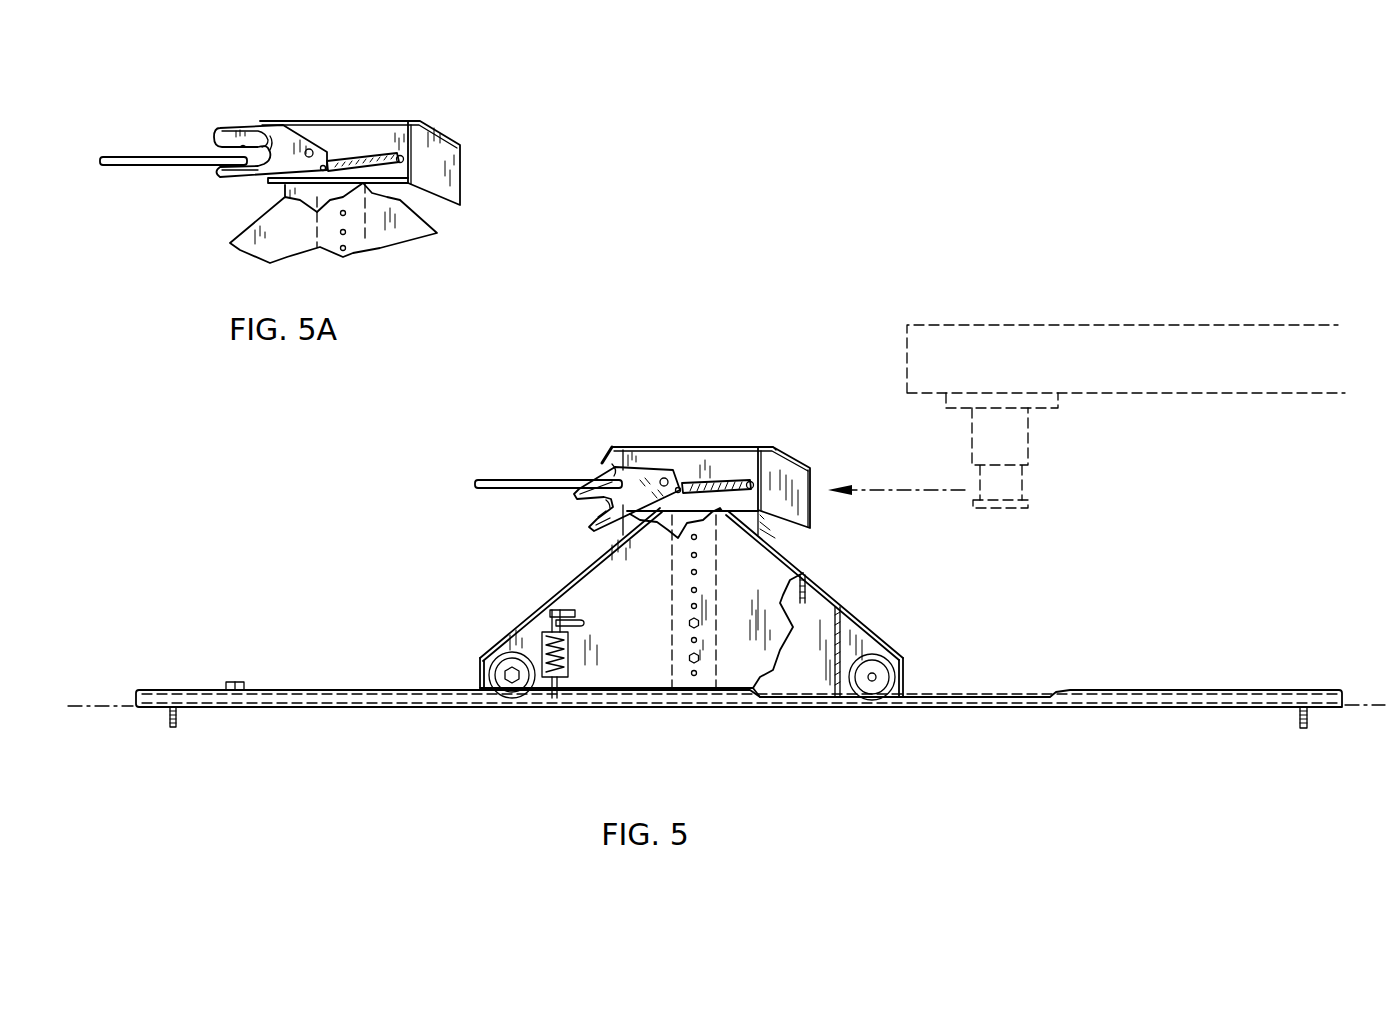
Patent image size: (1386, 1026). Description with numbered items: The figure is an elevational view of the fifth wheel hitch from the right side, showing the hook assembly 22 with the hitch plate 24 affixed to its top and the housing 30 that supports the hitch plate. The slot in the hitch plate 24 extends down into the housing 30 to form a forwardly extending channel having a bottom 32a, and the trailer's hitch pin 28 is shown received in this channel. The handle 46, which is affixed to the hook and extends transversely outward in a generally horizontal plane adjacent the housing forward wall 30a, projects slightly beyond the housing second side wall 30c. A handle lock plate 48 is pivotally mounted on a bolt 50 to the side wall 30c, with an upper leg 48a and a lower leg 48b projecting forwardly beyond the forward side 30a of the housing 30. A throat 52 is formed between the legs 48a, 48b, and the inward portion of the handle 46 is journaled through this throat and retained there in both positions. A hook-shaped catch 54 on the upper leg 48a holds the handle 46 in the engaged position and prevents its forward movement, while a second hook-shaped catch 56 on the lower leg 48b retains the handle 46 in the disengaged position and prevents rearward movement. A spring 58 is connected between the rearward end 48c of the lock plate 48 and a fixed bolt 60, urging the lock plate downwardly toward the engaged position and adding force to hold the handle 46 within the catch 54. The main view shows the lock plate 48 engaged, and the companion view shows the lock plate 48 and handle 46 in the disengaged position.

In FIG. 5, the hook assembly 22 is at (635, 410).
In FIG. 5, the hitch plate 24 is at (778, 448).
In FIG. 5, the hitch pin 28 is at (1007, 478).
In FIG. 5A, the housing 30 is at (381, 129).
In FIG. 5, the housing 30 is at (734, 450).
In FIG. 5, the housing forward wall 30a is at (606, 452).
In FIG. 5A, the housing second side wall 30c is at (267, 184).
In FIG. 5, the housing second side wall 30c is at (704, 468).
In FIG. 5, the channel bottom 32a is at (820, 508).
In FIG. 5A, the handle 46 is at (138, 165).
In FIG. 5, the handle 46 is at (503, 482).
In FIG. 5A, the handle lock plate 48 is at (287, 137).
In FIG. 5, the handle lock plate 48 is at (600, 473).
In FIG. 5A, the upper leg 48a is at (223, 128).
In FIG. 5, the upper leg 48a is at (573, 500).
In FIG. 5A, the lower leg 48b is at (230, 176).
In FIG. 5, the lower leg 48b is at (597, 533).
In FIG. 5, the rearward end 48c is at (673, 498).
In FIG. 5A, the bolt 50 is at (310, 149).
In FIG. 5, the bolt 50 is at (664, 477).
In FIG. 5A, the throat 52 is at (218, 150).
In FIG. 5, the throat 52 is at (585, 513).
In FIG. 5A, the hook-shaped catch 54 is at (282, 133).
In FIG. 5, the hook-shaped catch 54 is at (610, 462).
In FIG. 5, the second hook-shaped catch 56 is at (600, 516).
In FIG. 5, the spring 58 is at (754, 479).
In FIG. 5, the fixed bolt 60 is at (765, 528).